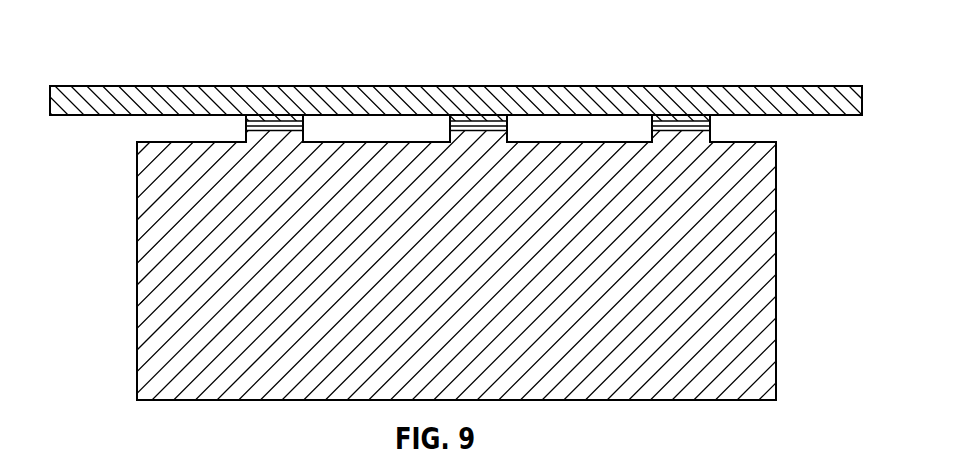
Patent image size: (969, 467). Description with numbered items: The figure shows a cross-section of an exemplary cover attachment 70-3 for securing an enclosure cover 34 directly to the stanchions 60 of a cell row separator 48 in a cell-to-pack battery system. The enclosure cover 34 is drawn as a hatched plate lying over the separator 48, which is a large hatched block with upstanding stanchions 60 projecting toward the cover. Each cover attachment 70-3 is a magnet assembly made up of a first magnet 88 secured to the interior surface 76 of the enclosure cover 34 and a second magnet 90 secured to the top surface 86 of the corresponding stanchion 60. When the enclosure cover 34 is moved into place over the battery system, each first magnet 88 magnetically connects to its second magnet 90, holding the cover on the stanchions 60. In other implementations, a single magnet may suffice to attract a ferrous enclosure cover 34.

The enclosure cover 34 is at (790, 85).
The interior surface 76 is at (70, 115).
The cell row separator 48 is at (746, 306).
The first magnet 88 is at (288, 120).
The stanchion 60 is at (283, 137).
The second magnet 90 is at (298, 127).
The top surface 86 is at (251, 138).
The cover attachment 70-3 is at (236, 128).